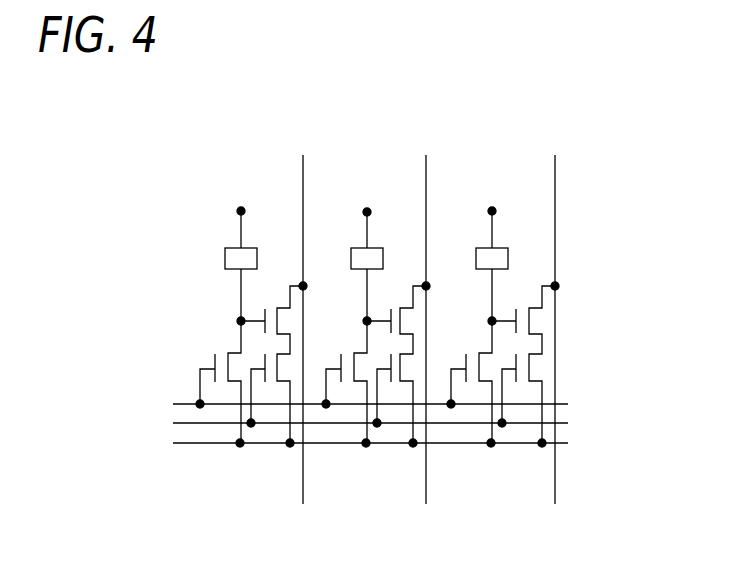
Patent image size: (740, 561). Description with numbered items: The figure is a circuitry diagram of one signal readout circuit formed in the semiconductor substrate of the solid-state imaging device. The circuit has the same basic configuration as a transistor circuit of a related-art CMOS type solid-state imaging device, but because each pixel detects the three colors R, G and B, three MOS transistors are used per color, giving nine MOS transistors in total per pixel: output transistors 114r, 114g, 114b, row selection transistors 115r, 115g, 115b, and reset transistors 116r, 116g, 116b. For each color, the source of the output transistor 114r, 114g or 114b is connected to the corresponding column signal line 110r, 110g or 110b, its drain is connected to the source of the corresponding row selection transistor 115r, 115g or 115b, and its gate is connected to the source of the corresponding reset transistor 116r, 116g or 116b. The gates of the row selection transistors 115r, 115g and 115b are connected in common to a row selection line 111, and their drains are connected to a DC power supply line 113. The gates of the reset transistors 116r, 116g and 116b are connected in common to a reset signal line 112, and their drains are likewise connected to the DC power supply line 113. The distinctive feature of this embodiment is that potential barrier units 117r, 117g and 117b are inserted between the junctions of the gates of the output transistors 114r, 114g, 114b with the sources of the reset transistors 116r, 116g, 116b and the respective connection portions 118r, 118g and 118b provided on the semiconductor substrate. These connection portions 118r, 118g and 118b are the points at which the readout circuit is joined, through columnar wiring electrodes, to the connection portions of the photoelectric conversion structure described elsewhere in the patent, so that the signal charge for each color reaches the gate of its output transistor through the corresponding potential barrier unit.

The column signal line 110b is at (303, 167).
The column signal line 110g is at (427, 185).
The column signal line 110r is at (555, 178).
The row selection line 111 is at (568, 423).
The reset signal line 112 is at (568, 405).
The DC power supply line 113 is at (568, 443).
The output transistor 114b is at (268, 318).
The output transistor 114g is at (423, 301).
The output transistor 114r is at (530, 318).
The row selection transistor 115b is at (268, 378).
The row selection transistor 115g is at (393, 378).
The row selection transistor 115r is at (540, 358).
The reset transistor 116b is at (222, 375).
The reset transistor 116g is at (348, 378).
The reset transistor 116r is at (475, 385).
The potential barrier unit 117b is at (228, 258).
The potential barrier unit 117g is at (360, 250).
The potential barrier unit 117r is at (497, 258).
The connection portion 118b is at (241, 210).
The connection portion 118g is at (367, 212).
The connection portion 118r is at (492, 211).